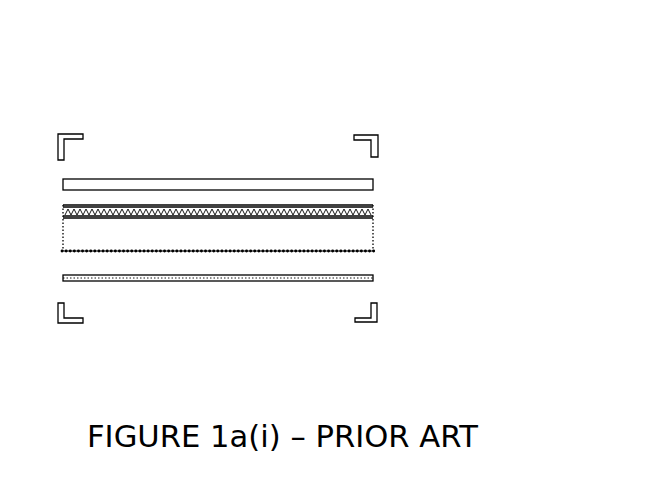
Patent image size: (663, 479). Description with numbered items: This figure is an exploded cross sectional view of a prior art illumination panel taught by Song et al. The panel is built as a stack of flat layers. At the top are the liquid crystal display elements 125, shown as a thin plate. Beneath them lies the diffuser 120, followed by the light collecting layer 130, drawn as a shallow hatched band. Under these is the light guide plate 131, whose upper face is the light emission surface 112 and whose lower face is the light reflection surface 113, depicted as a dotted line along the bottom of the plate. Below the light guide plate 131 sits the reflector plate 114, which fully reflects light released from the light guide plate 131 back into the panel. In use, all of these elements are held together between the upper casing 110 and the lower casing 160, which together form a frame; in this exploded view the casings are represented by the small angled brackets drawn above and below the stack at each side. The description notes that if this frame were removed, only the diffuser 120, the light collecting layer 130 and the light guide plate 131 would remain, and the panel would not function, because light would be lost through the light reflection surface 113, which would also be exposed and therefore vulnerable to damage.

The upper casing 110 is at (378, 137).
The liquid crystal display elements 125 is at (373, 179).
The diffuser 120 is at (281, 225).
The light collecting layer 130 is at (373, 210).
The light emission surface 112 is at (373, 218).
The light guide plate 131 is at (365, 233).
The light reflection surface 113 is at (373, 251).
The reflector plate 114 is at (373, 278).
The lower casing 160 is at (377, 310).